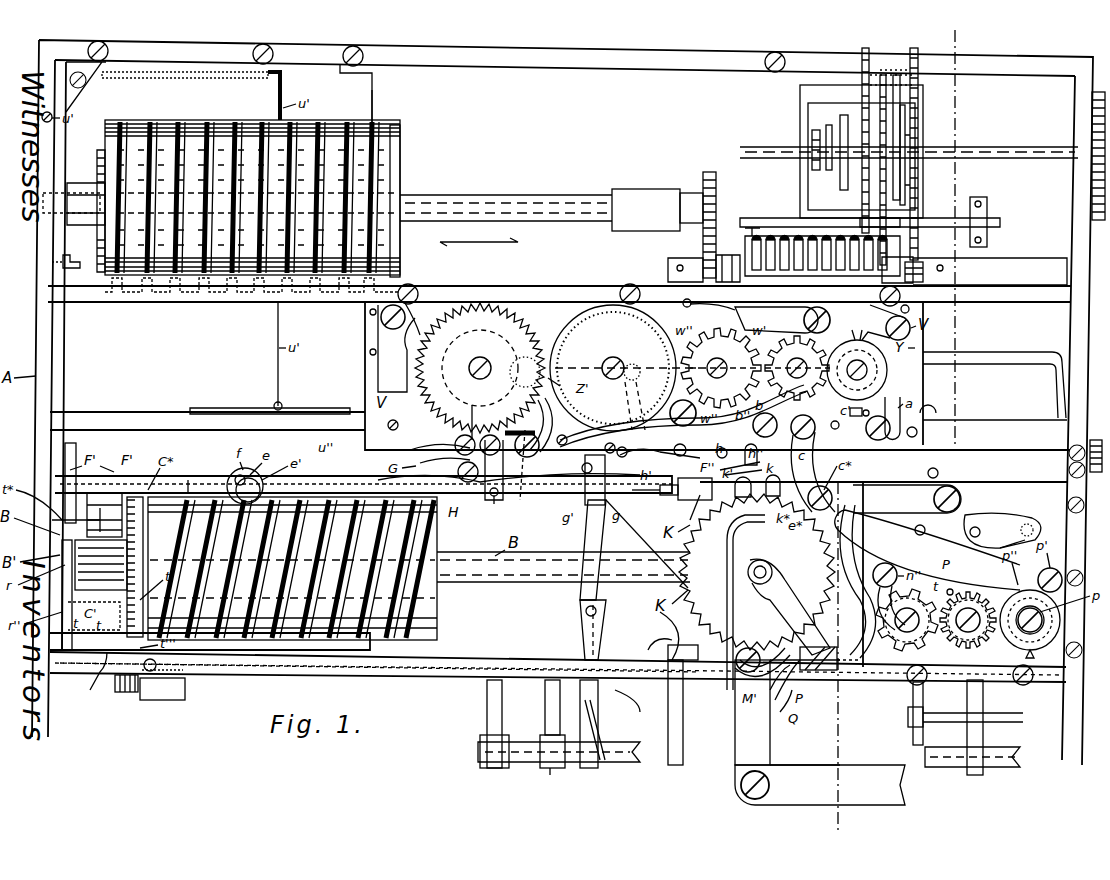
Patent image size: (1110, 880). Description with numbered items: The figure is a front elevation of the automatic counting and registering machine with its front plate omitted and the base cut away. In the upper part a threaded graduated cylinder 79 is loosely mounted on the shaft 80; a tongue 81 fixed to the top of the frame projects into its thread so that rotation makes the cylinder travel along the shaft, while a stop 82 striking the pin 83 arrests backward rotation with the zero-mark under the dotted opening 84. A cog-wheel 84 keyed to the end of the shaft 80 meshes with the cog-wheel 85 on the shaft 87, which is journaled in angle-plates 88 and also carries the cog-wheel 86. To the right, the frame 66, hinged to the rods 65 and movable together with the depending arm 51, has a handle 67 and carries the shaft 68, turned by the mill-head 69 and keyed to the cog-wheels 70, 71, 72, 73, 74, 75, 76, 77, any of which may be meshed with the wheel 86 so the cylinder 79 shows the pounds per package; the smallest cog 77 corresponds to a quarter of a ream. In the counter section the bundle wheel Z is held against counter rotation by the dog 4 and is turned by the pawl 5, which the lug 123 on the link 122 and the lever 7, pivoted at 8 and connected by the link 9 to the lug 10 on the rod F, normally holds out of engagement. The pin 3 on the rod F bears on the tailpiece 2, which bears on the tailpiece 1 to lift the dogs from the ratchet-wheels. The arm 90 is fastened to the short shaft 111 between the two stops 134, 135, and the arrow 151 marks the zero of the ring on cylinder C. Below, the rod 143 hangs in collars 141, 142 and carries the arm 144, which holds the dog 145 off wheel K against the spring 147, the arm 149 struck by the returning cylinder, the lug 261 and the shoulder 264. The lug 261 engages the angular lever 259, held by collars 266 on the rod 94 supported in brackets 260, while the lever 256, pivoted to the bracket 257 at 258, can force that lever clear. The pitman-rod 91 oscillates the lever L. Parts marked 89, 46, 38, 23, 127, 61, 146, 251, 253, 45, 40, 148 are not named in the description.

The threaded graduated cylinder 79 is at (190, 122).
The shaft 80 is at (535, 193).
The tongue 81 is at (374, 97).
The stop 82 is at (75, 260).
The pin 83 is at (67, 256).
The cog-wheel 84 is at (398, 165).
The cog-wheel 85 is at (695, 262).
The cog-wheel 86 is at (925, 268).
The shaft 87 is at (825, 282).
The angle-plates 88 is at (732, 256).
The arrow 89 is at (479, 240).
The handle 67 is at (860, 60).
The cog-wheel 70 is at (918, 52).
The cog-wheel 71 is at (920, 82).
The cog-wheel 72 is at (905, 150).
The frame 66 is at (908, 150).
The cog-wheel 73 is at (920, 160).
The shaft 68 is at (975, 148).
The mill-head 69 is at (1090, 130).
The cog-wheel 75 is at (843, 115).
The cog-wheel 76 is at (826, 170).
The smallest cog-wheel 77 is at (815, 132).
The cog-wheel 74 is at (808, 200).
The rods 65 is at (928, 218).
The depending arm 51 is at (912, 218).
The lever 46 is at (762, 235).
The tailpiece 2 is at (842, 426).
The dog 4 is at (412, 325).
The pinion 38 is at (525, 372).
The pin 23 is at (642, 371).
The pawl 5 is at (552, 425).
The lever 7 is at (468, 422).
The pivot 8 is at (457, 445).
The link 9 is at (494, 470).
The lug 10 is at (491, 508).
The lug 123 is at (528, 476).
The link 122 is at (982, 352).
The pin 127 is at (867, 410).
The screws 61 is at (1066, 464).
The pin 3 is at (672, 488).
The tailpiece 1 is at (694, 507).
The lever 256 is at (582, 596).
The pivot 258 is at (585, 612).
The bracket 257 is at (604, 622).
The dog 145 is at (668, 625).
The arm 144 is at (655, 643).
The spring 147 is at (667, 654).
The stop 134 is at (931, 526).
The short shaft 111 is at (975, 527).
The arm 90 is at (1008, 537).
The stop 135 is at (1032, 526).
The rod 94 is at (590, 750).
The brackets 260 is at (486, 720).
The post 146 is at (534, 707).
The collars 266 is at (548, 736).
The collar 142 is at (602, 724).
The lug 261 is at (591, 730).
The shoulder 264 is at (636, 709).
The angular lever 259 is at (550, 770).
The post 251 is at (924, 696).
The bar 253 is at (990, 717).
The pitman-rod 91 is at (820, 785).
The scale 45 is at (135, 567).
The scale 40 is at (133, 605).
The arrow 151 is at (178, 490).
The arm 149 is at (86, 679).
The rack 148 is at (122, 693).
The collar 141 is at (155, 700).
The rod 143 is at (295, 682).